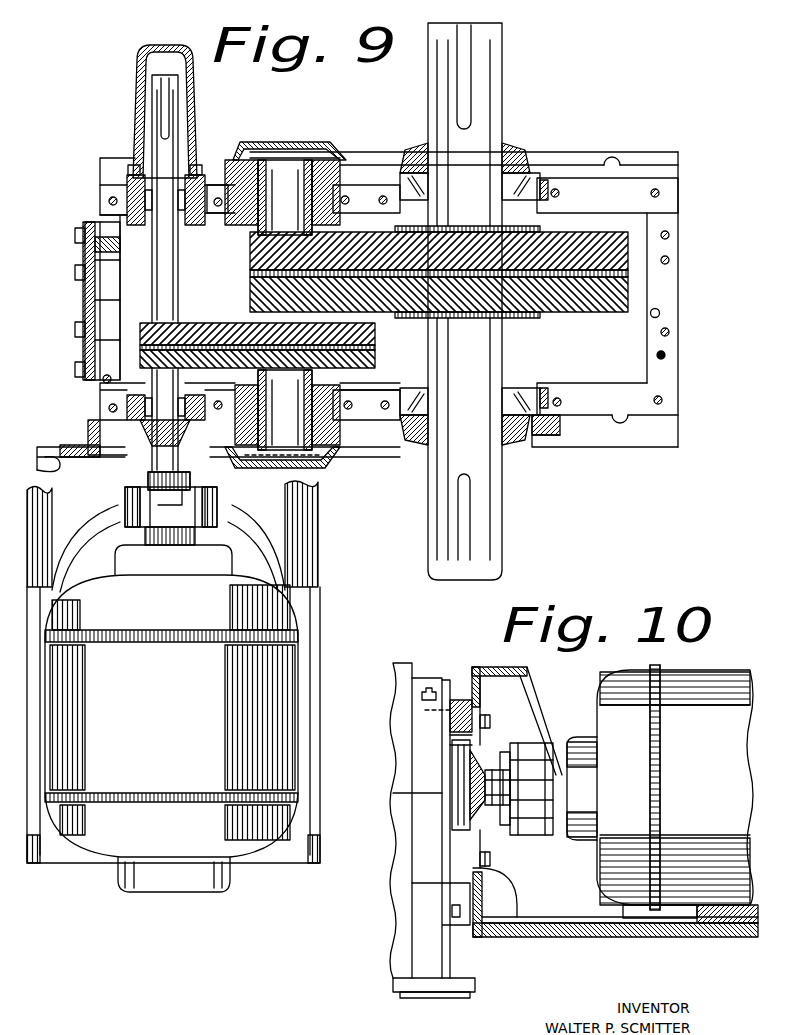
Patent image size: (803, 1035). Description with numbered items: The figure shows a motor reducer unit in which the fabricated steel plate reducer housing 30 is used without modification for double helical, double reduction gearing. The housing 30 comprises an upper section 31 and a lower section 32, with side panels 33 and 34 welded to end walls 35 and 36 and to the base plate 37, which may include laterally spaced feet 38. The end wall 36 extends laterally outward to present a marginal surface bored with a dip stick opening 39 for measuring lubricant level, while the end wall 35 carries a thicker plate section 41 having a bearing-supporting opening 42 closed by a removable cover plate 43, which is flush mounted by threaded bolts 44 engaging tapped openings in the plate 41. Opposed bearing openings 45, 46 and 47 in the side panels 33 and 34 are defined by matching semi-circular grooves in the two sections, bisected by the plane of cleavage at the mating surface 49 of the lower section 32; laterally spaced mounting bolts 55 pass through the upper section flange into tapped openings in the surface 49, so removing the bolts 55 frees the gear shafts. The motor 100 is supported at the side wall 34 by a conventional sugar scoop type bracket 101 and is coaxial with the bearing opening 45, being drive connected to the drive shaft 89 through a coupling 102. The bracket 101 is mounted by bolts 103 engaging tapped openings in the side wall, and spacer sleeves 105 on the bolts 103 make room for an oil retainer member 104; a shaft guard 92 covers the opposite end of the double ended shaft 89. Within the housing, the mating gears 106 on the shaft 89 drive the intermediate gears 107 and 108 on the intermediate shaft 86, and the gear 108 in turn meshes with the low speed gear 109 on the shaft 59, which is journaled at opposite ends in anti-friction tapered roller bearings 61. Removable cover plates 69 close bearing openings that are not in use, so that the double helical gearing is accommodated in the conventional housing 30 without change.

In FIG. 9, the reducer housing 30 is at (632, 142).
In FIG. 10, the reducer housing 30 is at (400, 913).
In FIG. 10, the upper section 31 is at (399, 756).
In FIG. 9, the lower section 32 is at (666, 162).
In FIG. 10, the lower section 32 is at (400, 953).
In FIG. 9, the side panel 33 is at (107, 188).
In FIG. 9, the side panel 34 is at (100, 400).
In FIG. 9, the end wall 35 is at (104, 382).
In FIG. 10, the end wall 35 is at (407, 850).
In FIG. 9, the end wall 36 is at (676, 370).
In FIG. 10, the base plate 37 is at (476, 981).
In FIG. 10, the feet 38 is at (447, 998).
In FIG. 9, the dip stick opening 39 is at (661, 314).
In FIG. 9, the thicker plate section 41 is at (95, 225).
In FIG. 9, the bearing-supporting opening 42 is at (86, 256).
In FIG. 9, the cover plate 43 is at (84, 300).
In FIG. 9, the bolts 44 is at (77, 278).
In FIG. 9, the bearing opening 45 is at (138, 228).
In FIG. 9, the bearing opening 46 is at (331, 218).
In FIG. 9, the bearing opening 47 is at (541, 208).
In FIG. 9, the mating surface 49 is at (680, 192).
In FIG. 9, the mounting bolts 55 is at (110, 198).
In FIG. 10, the mounting bolts 55 is at (429, 690).
In FIG. 9, the shaft 59 is at (500, 68).
In FIG. 9, the tapered roller bearings 61 is at (526, 184).
In FIG. 9, the cover plates 69 is at (280, 145).
In FIG. 9, the intermediate shaft 86 is at (300, 165).
In FIG. 9, the drive shaft 89 is at (164, 262).
In FIG. 10, the drive shaft 89 is at (495, 806).
In FIG. 9, the shaft guard 92 is at (196, 102).
In FIG. 9, the motor 100 is at (95, 838).
In FIG. 10, the motor 100 is at (700, 681).
In FIG. 9, the bracket 101 is at (318, 549).
In FIG. 10, the bracket 101 is at (538, 695).
In FIG. 9, the coupling 102 is at (140, 512).
In FIG. 10, the coupling 102 is at (532, 745).
In FIG. 9, the bolts 103 is at (108, 470).
In FIG. 10, the bolts 103 is at (491, 722).
In FIG. 9, the oil retainer member 104 is at (200, 456).
In FIG. 10, the oil retainer member 104 is at (473, 771).
In FIG. 9, the spacer sleeves 105 is at (88, 437).
In FIG. 10, the spacer sleeves 105 is at (455, 702).
In FIG. 9, the mating gears 106 is at (191, 321).
In FIG. 9, the intermediate gear 107 is at (246, 327).
In FIG. 9, the intermediate gear 108 is at (251, 249).
In FIG. 9, the low speed gear 109 is at (586, 306).